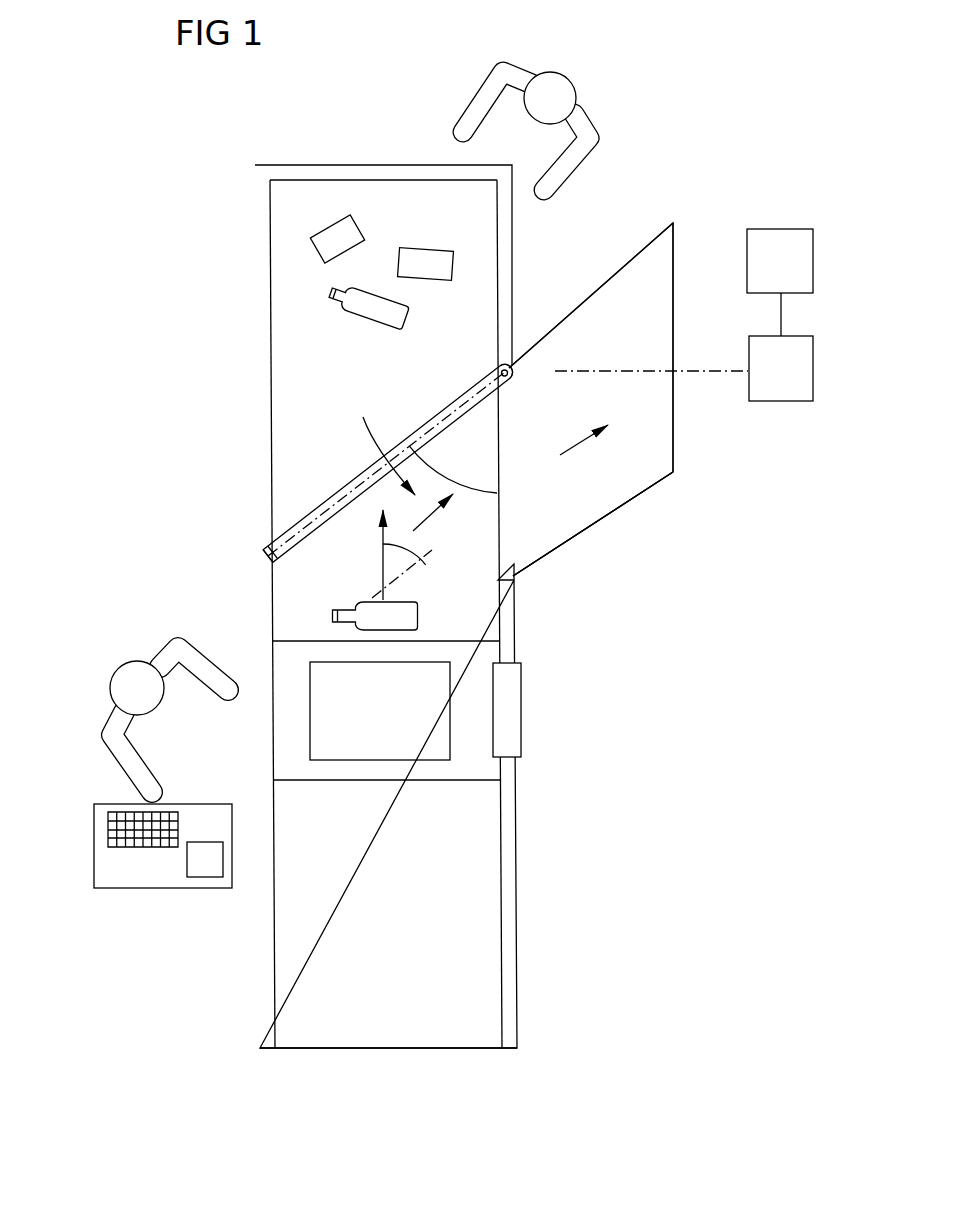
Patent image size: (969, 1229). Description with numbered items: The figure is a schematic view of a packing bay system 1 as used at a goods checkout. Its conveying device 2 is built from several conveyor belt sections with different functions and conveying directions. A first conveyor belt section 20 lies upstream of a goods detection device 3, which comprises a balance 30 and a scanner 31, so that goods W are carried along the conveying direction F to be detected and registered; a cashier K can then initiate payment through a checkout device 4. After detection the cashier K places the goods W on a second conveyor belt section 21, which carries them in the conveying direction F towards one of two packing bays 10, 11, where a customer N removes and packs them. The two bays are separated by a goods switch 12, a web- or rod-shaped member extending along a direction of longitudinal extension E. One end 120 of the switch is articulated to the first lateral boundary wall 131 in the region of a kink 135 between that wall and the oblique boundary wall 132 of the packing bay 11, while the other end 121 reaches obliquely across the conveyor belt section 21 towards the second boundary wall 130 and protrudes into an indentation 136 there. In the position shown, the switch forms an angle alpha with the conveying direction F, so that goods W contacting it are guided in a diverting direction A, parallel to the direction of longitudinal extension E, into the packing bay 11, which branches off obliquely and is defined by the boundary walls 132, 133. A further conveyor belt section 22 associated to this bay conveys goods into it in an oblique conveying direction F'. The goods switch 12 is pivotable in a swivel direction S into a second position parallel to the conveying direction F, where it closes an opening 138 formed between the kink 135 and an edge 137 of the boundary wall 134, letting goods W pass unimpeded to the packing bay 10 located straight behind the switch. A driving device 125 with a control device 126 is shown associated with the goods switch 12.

The packing bay system 1 is at (597, 183).
The conveying device 2 is at (508, 990).
The goods detection device 3 is at (479, 768).
The checkout device 4 is at (165, 870).
The packing bay 10 is at (296, 283).
The packing bay 11 is at (609, 483).
The goods switch 12 is at (333, 493).
The first conveyor belt section 20 is at (480, 884).
The second conveyor belt section 21 is at (480, 604).
The further conveyor belt section 22 is at (573, 517).
The balance 30 is at (470, 735).
The scanner 31 is at (508, 717).
The end 120 is at (508, 365).
The end 121 is at (268, 558).
The driving device 125 is at (776, 385).
The control device 126 is at (775, 235).
The boundary wall 130 is at (262, 425).
The boundary wall 131 is at (505, 255).
The boundary wall 132 is at (617, 273).
The boundary wall 133 is at (648, 492).
The boundary wall 134 is at (507, 943).
The kink 135 is at (512, 372).
The indentation 136 is at (265, 548).
The edge 137 is at (517, 567).
The opening 138 is at (512, 492).
The customer N is at (574, 60).
The cashier K is at (118, 650).
The goods W is at (326, 313).
The direction of longitudinal extension E is at (425, 437).
The swivel direction S is at (380, 455).
The diverting direction A is at (433, 517).
The conveying direction F is at (430, 523).
The conveying direction F' is at (584, 439).